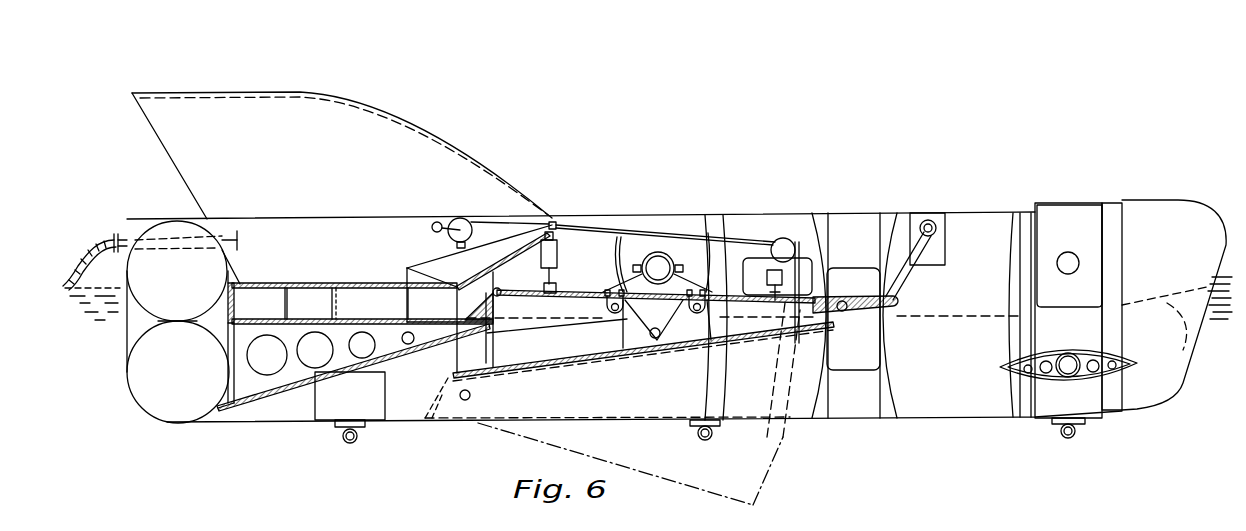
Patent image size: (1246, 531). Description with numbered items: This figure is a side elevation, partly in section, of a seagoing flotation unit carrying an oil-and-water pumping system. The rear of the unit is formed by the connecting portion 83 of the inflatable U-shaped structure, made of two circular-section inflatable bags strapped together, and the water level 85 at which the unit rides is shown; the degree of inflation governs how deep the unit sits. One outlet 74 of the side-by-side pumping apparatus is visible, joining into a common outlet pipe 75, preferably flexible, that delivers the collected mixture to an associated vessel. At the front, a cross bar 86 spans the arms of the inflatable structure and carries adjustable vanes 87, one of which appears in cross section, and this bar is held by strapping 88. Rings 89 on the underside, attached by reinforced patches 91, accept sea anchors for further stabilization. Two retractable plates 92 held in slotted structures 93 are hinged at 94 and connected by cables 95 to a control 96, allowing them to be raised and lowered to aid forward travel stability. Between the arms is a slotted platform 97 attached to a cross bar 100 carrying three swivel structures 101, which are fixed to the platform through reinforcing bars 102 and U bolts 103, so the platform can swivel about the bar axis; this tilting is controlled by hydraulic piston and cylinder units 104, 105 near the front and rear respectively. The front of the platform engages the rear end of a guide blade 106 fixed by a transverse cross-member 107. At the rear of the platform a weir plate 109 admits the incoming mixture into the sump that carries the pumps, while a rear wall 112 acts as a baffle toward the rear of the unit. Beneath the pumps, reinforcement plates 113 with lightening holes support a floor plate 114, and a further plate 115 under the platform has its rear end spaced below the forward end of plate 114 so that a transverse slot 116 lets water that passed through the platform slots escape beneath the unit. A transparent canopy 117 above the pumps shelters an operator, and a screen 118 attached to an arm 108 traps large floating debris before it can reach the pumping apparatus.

The outlet 74 is at (123, 233).
The common outlet pipe 75 is at (73, 272).
The connecting portion 83 is at (181, 405).
The water level 85 is at (1212, 280).
The cross bar 86 is at (1065, 360).
The adjustable vanes 87 is at (1087, 372).
The strapping 88 is at (1048, 272).
The rings 89 is at (350, 444).
The reinforced patches 91 is at (327, 400).
The retractable plates 92 is at (770, 457).
The slotted structures 93 is at (437, 414).
The hinge 94 is at (465, 400).
The cables 95 is at (731, 238).
The control 96 is at (437, 222).
The platform 97 is at (573, 295).
The cross bar 100 is at (657, 252).
The swivel structures 101 is at (683, 240).
The reinforcing bars 102 is at (620, 303).
The U bolts 103 is at (697, 320).
The hydraulic piston and cylinder unit 104 is at (560, 250).
The hydraulic piston and cylinder unit 105 is at (768, 270).
The guide blade 106 is at (880, 313).
The cross-member 107 is at (844, 302).
The arm 108 is at (910, 277).
The weir plate 109 is at (495, 312).
The rear wall 112 is at (227, 310).
The reinforcement plates 113 is at (252, 382).
The plate 114 is at (263, 398).
The plate 115 is at (522, 368).
The transverse slot 116 is at (468, 345).
The transparent canopy 117 is at (418, 138).
The screen 118 is at (907, 248).